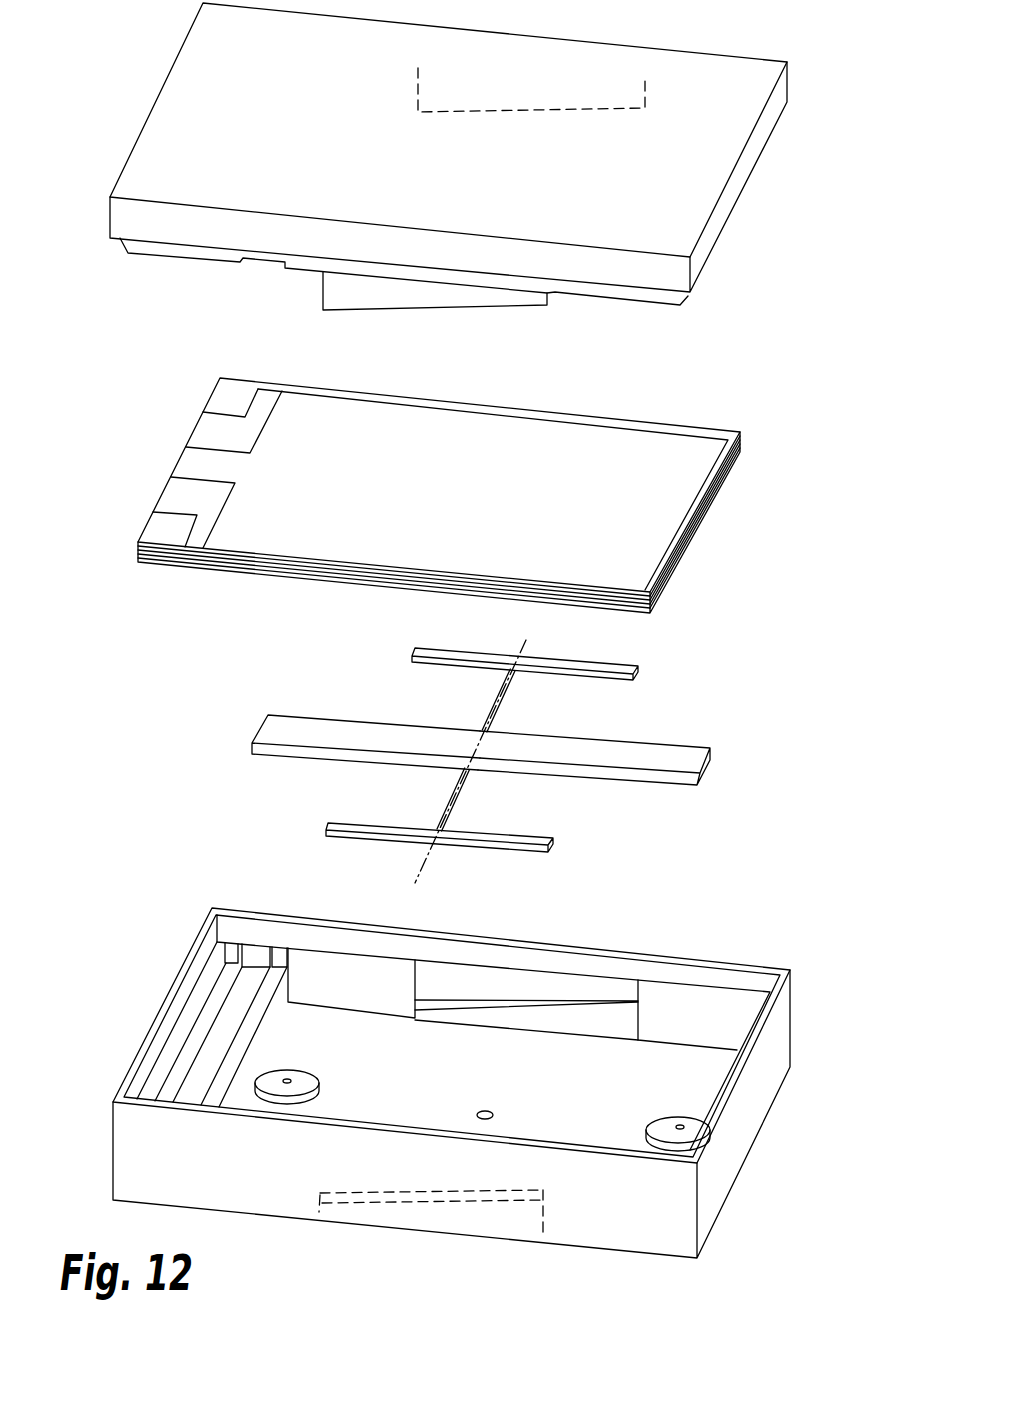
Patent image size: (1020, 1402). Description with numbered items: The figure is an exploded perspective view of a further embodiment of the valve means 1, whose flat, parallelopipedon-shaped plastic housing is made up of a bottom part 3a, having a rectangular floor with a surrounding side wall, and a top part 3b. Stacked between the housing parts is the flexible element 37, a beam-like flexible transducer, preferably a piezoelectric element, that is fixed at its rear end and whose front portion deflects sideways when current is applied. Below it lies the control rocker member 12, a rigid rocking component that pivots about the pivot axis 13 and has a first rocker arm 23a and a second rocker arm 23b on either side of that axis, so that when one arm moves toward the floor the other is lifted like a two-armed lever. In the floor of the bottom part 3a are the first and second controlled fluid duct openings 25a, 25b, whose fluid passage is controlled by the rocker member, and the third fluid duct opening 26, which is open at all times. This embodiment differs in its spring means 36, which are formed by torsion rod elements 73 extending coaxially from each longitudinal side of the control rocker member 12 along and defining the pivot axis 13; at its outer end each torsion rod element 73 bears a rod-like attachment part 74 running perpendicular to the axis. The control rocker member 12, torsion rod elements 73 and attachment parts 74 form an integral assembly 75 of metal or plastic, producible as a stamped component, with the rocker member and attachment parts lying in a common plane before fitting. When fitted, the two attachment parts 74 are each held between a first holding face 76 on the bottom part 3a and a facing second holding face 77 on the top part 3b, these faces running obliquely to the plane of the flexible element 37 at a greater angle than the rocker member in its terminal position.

The valve means 1 is at (761, 396).
The bottom part 3a is at (603, 1222).
The top part 3b is at (703, 190).
The control rocker member 12 is at (675, 753).
The pivot axis 13 is at (427, 860).
The first rocker arm 23a is at (283, 730).
The second rocker arm 23b is at (695, 765).
The first controlled fluid duct opening 25a is at (287, 1080).
The second controlled fluid duct opening 25b is at (680, 1120).
The third fluid duct opening 26 is at (485, 1112).
The spring means 36 is at (481, 750).
The flexible element 37 is at (658, 525).
The torsion rod element 73 is at (523, 692).
The attachment part 74 is at (620, 663).
The integral assembly 75 is at (428, 717).
The first holding face 76 is at (560, 993).
The second holding face 77 is at (474, 116).